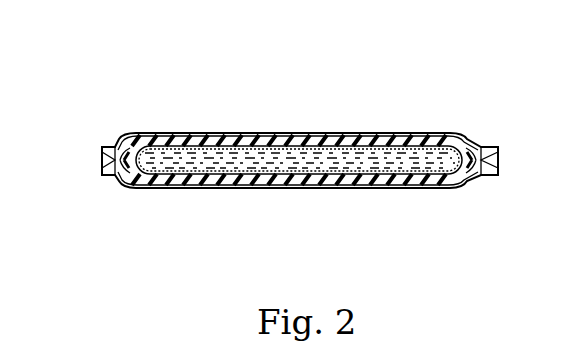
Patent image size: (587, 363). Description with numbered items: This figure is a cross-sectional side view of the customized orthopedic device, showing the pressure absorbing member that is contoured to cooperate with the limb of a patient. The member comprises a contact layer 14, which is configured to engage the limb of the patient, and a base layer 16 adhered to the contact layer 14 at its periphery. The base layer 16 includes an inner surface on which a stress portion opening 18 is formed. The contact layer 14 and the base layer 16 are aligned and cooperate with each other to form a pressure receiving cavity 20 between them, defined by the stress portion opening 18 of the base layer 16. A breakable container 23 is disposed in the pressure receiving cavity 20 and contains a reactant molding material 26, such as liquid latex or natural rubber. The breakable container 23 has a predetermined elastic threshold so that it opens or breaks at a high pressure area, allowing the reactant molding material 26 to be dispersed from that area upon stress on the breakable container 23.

The contact layer 14 is at (144, 137).
The base layer 16 is at (147, 186).
The stress portion opening 18 is at (415, 170).
The pressure receiving cavity 20 is at (227, 165).
The breakable container 23 is at (342, 173).
The reactant molding material 26 is at (333, 140).